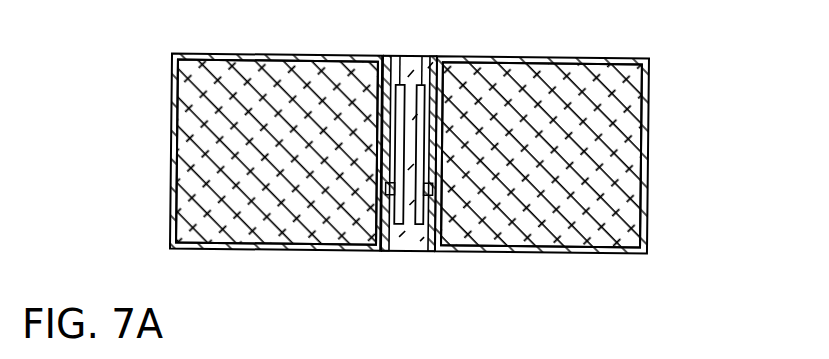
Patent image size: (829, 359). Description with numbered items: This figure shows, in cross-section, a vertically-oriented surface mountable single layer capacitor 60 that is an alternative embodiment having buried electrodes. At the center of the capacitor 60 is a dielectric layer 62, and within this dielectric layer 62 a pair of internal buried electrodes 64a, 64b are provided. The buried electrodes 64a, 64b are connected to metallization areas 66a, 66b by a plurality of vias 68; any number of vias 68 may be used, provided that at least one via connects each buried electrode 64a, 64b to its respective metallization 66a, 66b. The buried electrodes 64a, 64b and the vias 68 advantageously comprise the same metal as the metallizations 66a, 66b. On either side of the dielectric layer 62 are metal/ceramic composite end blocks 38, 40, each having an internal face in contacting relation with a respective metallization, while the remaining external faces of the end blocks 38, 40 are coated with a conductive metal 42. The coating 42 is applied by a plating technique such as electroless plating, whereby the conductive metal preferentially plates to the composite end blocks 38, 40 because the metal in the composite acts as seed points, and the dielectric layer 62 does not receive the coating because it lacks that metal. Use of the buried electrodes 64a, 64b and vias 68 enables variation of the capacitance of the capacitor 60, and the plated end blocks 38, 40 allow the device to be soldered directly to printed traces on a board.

The capacitor 60 is at (609, 31).
The end block 38 is at (176, 135).
The end block 40 is at (642, 172).
The conductive metal coating 42 is at (170, 178).
The dielectric layer 62 is at (389, 57).
The buried electrode 64a is at (398, 57).
The buried electrode 64b is at (422, 57).
The metallization area 66a is at (356, 252).
The metallization area 66b is at (421, 253).
The via 68 is at (434, 58).